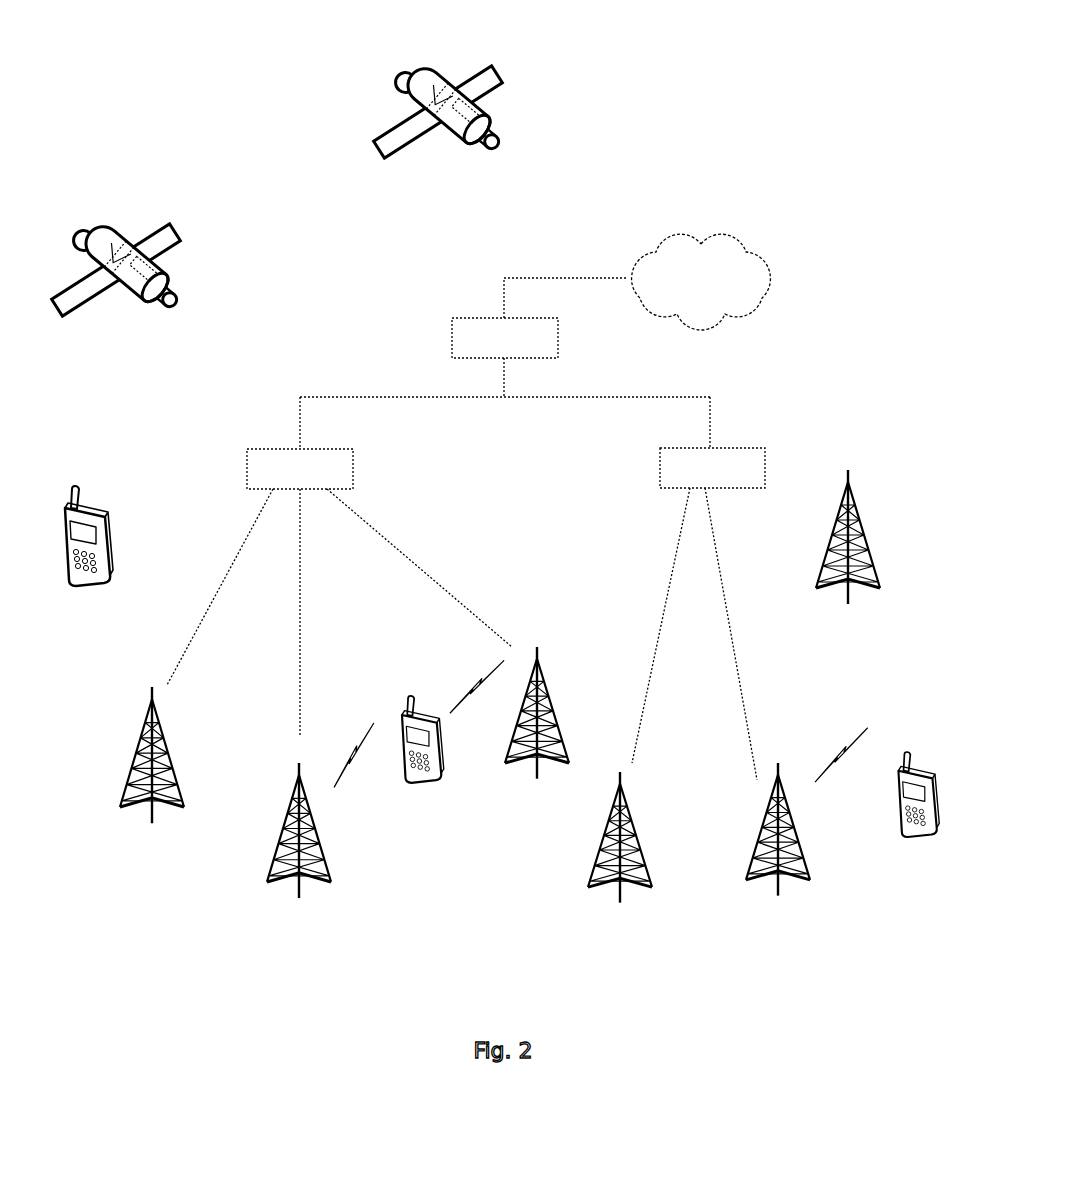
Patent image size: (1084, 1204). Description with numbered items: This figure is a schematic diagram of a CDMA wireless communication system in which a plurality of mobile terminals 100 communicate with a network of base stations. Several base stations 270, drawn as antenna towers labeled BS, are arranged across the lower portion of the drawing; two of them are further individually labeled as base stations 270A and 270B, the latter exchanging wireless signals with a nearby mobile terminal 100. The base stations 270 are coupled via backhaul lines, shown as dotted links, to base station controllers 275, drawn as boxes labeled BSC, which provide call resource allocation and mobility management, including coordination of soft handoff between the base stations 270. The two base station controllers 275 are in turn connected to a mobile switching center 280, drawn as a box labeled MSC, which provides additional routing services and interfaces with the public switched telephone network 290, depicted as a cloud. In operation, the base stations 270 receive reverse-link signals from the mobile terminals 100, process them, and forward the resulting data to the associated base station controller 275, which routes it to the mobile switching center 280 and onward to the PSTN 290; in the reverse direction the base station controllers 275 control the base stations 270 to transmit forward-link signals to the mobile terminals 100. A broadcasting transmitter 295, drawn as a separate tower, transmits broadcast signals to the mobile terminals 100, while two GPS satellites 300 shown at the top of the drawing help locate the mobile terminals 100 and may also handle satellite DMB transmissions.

The mobile terminal 100 is at (113, 556).
The base station 270 is at (138, 805).
The base station 270A is at (315, 880).
The base station 270B is at (555, 712).
The base station controller 275 is at (273, 449).
The mobile switching center 280 is at (452, 318).
The public switched telephone network 290 is at (775, 278).
The broadcasting transmitter 295 is at (860, 537).
The GPS satellite 300 is at (113, 234).